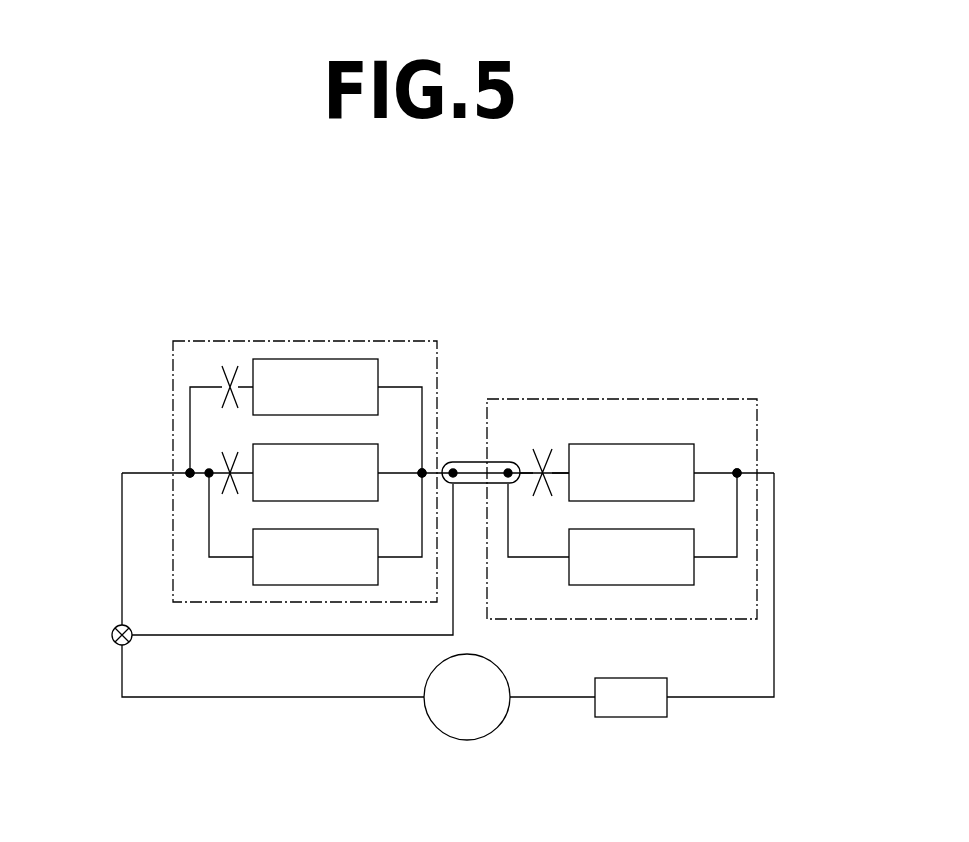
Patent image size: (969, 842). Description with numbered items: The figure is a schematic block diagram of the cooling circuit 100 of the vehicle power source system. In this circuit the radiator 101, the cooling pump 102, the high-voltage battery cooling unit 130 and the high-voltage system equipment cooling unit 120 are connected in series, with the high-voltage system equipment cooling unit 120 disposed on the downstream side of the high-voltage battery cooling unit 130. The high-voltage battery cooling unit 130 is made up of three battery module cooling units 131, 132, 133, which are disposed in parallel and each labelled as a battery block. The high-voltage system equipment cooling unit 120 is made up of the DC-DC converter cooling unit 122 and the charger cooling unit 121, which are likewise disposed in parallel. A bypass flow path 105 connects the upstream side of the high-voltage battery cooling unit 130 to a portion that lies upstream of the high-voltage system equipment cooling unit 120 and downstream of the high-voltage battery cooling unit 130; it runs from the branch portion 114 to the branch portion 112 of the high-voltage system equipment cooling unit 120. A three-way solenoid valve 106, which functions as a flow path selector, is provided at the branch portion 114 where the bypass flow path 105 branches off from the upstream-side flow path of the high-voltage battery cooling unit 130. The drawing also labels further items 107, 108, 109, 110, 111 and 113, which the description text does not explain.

The cooling circuit 100 is at (586, 276).
The radiator 101 is at (630, 718).
The cooling pump 102 is at (506, 720).
The bypass flow path 105 is at (345, 636).
The three-way solenoid valve 106 is at (110, 634).
The branch portion 114 is at (80, 648).
The valve 107 is at (543, 446).
The branch point 108 is at (190, 478).
The junction point 109 is at (422, 478).
The valve 110 is at (232, 360).
The valve 111 is at (229, 500).
The branch portion 112 is at (462, 462).
The junction point 113 is at (737, 472).
The high-voltage system equipment cooling unit 120 is at (726, 399).
The charger cooling unit 121 is at (680, 586).
The DC-DC converter cooling unit 122 is at (679, 444).
The high-voltage battery cooling unit 130 is at (374, 341).
The battery module cooling unit 131 is at (380, 372).
The battery module cooling unit 132 is at (292, 586).
The battery module cooling unit 133 is at (380, 457).